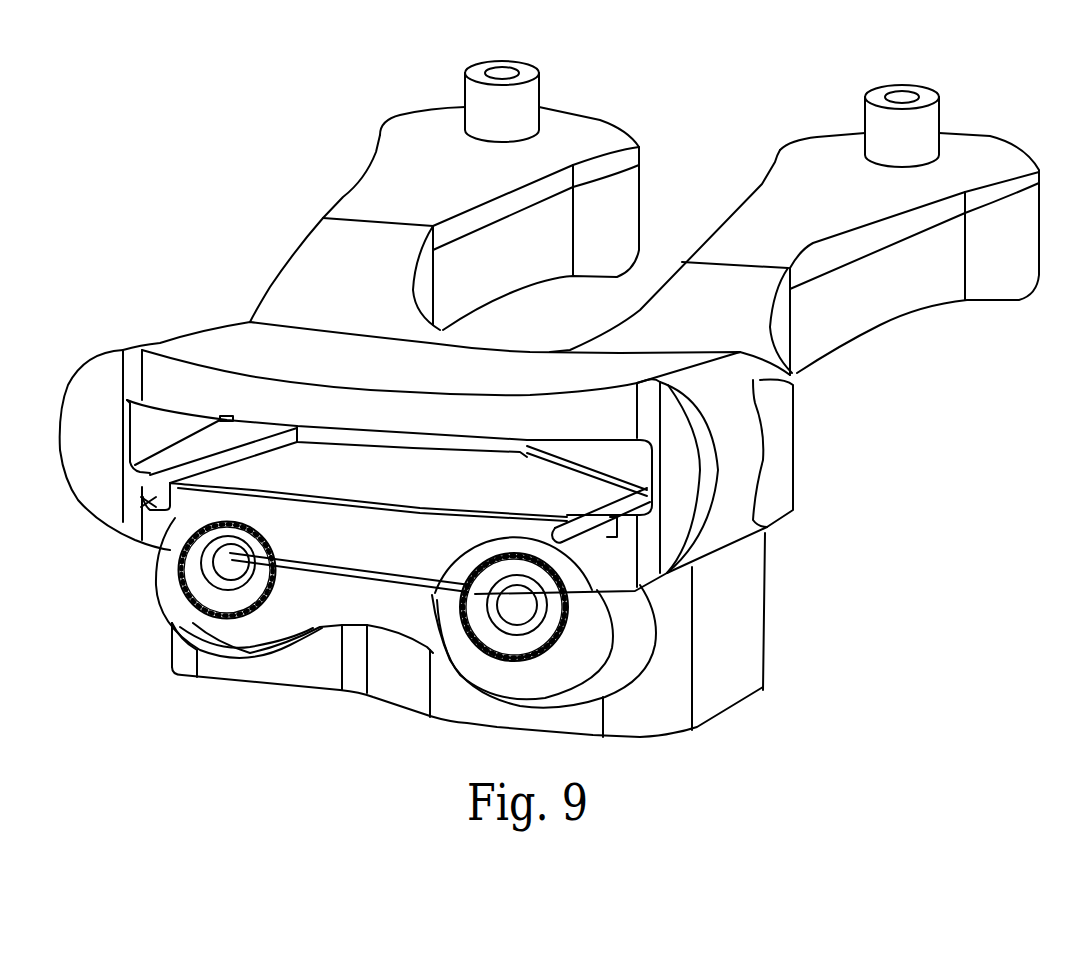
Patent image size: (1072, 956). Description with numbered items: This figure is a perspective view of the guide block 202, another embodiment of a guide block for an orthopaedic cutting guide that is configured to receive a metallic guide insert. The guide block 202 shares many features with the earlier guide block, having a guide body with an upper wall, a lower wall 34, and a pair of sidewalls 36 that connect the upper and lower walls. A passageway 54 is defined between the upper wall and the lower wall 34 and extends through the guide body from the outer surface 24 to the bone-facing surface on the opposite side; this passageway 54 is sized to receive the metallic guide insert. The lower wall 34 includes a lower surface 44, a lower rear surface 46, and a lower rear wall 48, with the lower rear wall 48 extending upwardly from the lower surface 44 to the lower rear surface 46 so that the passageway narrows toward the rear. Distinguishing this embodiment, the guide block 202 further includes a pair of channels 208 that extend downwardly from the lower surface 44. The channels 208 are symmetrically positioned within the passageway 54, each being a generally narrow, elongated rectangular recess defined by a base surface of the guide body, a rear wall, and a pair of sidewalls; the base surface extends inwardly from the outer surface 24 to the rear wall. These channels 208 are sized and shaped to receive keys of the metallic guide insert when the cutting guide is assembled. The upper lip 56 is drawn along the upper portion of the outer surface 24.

The guide block 202 is at (160, 183).
The outer surface 24 is at (167, 375).
The upper lip 56 is at (223, 413).
The sidewalls 36 is at (145, 418).
The lower surface 44 is at (435, 463).
The lower rear surface 46 is at (590, 448).
The lower rear wall 48 is at (627, 463).
The lower wall 34 is at (318, 485).
The passageway 54 is at (388, 465).
The channels 208 is at (149, 502).